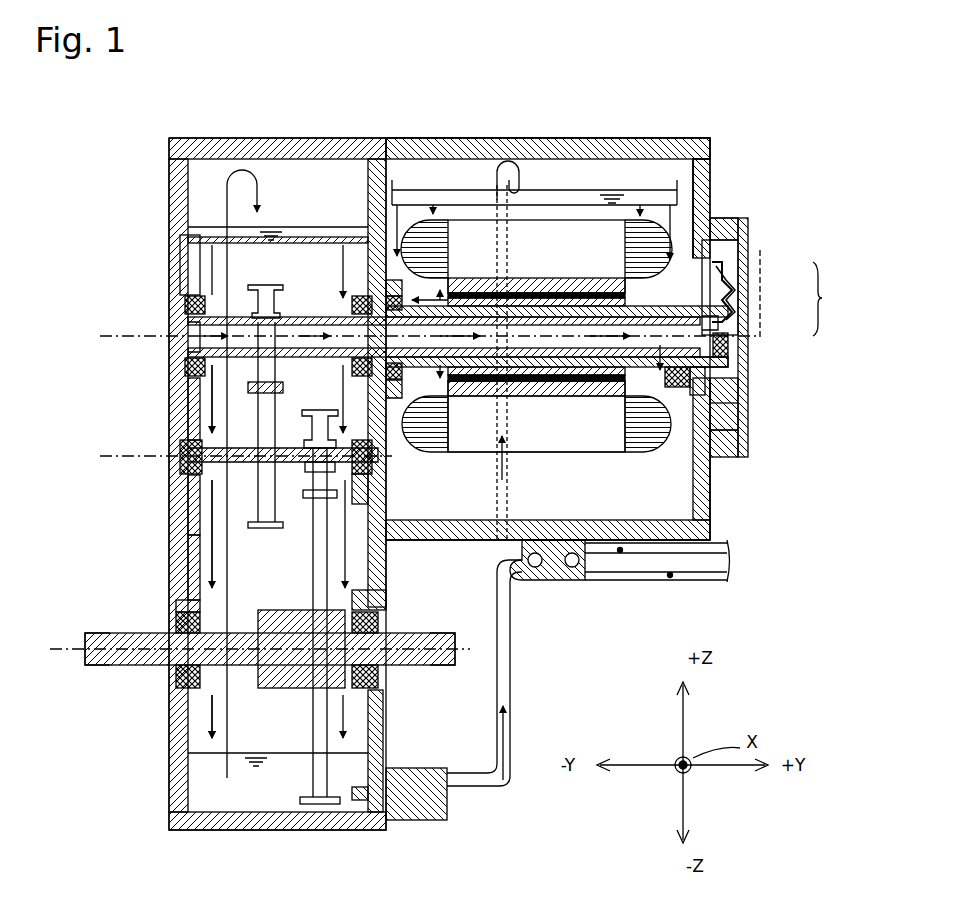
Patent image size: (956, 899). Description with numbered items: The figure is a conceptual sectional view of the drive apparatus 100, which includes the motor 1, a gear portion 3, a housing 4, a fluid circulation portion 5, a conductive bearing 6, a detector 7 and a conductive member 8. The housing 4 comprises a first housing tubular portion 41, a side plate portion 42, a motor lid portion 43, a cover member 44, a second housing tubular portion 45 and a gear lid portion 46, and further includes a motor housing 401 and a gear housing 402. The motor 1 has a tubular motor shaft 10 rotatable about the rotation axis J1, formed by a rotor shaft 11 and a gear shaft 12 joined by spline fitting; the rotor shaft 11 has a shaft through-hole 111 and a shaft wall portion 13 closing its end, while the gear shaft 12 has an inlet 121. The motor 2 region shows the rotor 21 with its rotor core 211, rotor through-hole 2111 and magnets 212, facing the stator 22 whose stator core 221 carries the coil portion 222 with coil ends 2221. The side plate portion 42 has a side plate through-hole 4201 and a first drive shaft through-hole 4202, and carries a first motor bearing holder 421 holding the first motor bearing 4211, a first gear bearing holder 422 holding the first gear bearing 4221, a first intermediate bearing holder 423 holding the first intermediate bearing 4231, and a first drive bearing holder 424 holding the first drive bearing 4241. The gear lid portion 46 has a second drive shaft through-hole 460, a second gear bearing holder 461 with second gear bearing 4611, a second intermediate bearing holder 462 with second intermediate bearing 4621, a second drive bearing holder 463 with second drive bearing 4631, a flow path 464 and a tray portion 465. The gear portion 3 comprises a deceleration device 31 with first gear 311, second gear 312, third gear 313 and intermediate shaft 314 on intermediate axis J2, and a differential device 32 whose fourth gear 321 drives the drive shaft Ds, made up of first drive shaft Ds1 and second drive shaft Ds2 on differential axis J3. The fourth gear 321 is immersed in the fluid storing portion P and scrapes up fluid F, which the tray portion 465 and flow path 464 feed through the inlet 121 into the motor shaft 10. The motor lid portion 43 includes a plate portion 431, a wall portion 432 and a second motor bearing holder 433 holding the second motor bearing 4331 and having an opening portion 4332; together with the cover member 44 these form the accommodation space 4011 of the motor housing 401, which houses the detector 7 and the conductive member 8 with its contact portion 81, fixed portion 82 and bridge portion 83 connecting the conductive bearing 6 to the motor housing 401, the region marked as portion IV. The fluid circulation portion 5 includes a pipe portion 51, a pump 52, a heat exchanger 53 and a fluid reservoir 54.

The drive apparatus 100 is at (172, 124).
The motor 1 is at (785, 164).
The housing 4 is at (633, 137).
The second housing tubular portion 45 is at (250, 137).
The gear housing 402 is at (166, 166).
The gear lid portion 46 is at (176, 200).
The second drive shaft through-hole 460 is at (176, 712).
The second gear bearing holder 461 is at (172, 400).
The second intermediate bearing holder 462 is at (172, 492).
The second drive bearing holder 463 is at (172, 577).
The flow path 464 is at (184, 298).
The second gear bearing 4611 is at (184, 366).
The second intermediate bearing 4621 is at (180, 458).
The second drive bearing 4631 is at (178, 620).
The inlet 121 is at (190, 340).
The rotation axis J1 is at (150, 332).
The intermediate axis J2 is at (146, 454).
The differential axis J3 is at (55, 647).
The gear shaft 12 is at (318, 317).
The rotor shaft 11 is at (640, 306).
The shaft wall portion 13 is at (690, 352).
The shaft through-hole 111 is at (560, 356).
The motor 2 is at (478, 462).
The rotor 21 is at (598, 284).
The rotor core 211 is at (530, 278).
The rotor through-hole 2111 is at (570, 292).
The magnet 212 is at (478, 278).
The stator 22 is at (578, 462).
The stator core 221 is at (532, 452).
The coil portion 222 is at (582, 464).
The coil end 2221 is at (643, 442).
The motor shaft 10 is at (662, 378).
The side plate portion 42 is at (368, 180).
The first gear bearing holder 422 is at (358, 294).
The first gear bearing 4221 is at (352, 300).
The first motor bearing 4211 is at (398, 298).
The side plate through-hole 4201 is at (352, 370).
The first motor bearing holder 421 is at (388, 400).
The first intermediate bearing 4231 is at (366, 464).
The first intermediate bearing holder 423 is at (366, 492).
The first drive bearing holder 424 is at (388, 592).
The first drive bearing 4241 is at (380, 620).
The first drive shaft through-hole 4202 is at (384, 700).
The tray portion 465 is at (298, 237).
The gear portion 3 is at (243, 504).
The deceleration device 31 is at (280, 281).
The first gear 311 is at (258, 285).
The second gear 312 is at (312, 529).
The third gear 313 is at (322, 410).
The intermediate shaft 314 is at (320, 462).
The fourth gear 321 is at (310, 806).
The differential device 32 is at (262, 692).
The fluid storing portion P is at (292, 752).
The drive shaft Ds is at (165, 676).
The first drive shaft Ds1 is at (428, 665).
The second drive shaft Ds2 is at (108, 666).
The first housing tubular portion 41 is at (462, 541).
The motor housing 401 is at (714, 512).
The accommodation space 4011 is at (724, 446).
The motor lid portion 43 is at (714, 165).
The plate portion 431 is at (710, 188).
The wall portion 432 is at (708, 262).
The opening portion 4332 is at (740, 222).
The portion IV is at (762, 254).
The conductive member 8 is at (825, 299).
The fixed portion 82 is at (732, 272).
The bridge portion 83 is at (732, 302).
The contact portion 81 is at (736, 320).
The conductive bearing 6 is at (730, 348).
The detector 7 is at (706, 380).
The second motor bearing holder 433 is at (740, 418).
The second motor bearing 4331 is at (740, 403).
The cover member 44 is at (749, 440).
The fluid reservoir 54 is at (418, 206).
The fluid circulation portion 5 is at (585, 652).
The pipe portion 51 is at (511, 686).
The fluid F is at (510, 734).
The pump 52 is at (412, 822).
The heat exchanger 53 is at (556, 581).